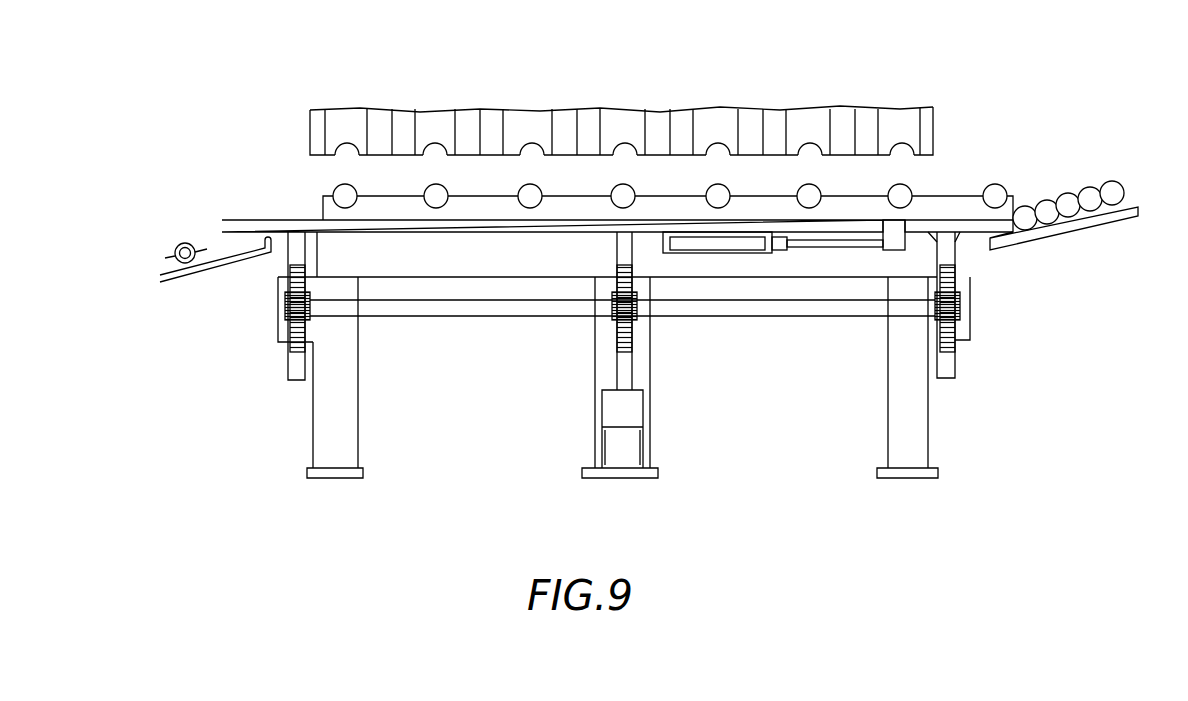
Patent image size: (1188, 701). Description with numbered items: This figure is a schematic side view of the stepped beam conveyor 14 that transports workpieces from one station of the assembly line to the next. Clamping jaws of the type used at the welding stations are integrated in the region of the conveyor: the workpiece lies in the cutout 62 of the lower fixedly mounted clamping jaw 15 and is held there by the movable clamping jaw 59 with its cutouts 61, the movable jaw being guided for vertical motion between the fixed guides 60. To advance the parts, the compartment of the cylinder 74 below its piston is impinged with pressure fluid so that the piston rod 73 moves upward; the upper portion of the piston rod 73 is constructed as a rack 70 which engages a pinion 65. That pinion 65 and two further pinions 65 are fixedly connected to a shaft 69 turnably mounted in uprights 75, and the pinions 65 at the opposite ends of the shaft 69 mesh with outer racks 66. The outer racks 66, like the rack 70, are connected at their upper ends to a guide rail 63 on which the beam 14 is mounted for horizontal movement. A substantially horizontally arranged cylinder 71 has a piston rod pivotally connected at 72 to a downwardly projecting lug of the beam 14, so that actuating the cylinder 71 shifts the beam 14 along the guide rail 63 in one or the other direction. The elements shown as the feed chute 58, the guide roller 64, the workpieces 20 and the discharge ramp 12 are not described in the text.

The discharge ramp 12 is at (1057, 228).
The stepped beam conveyor 14 is at (947, 207).
The lower fixedly mounted clamping jaw 15 is at (442, 255).
The workpieces 20 is at (998, 177).
The feed chute 58 is at (210, 265).
The movable clamping jaw 59 is at (345, 120).
The fixed guides 60 is at (380, 122).
The cutouts 61 is at (432, 140).
The cutout 62 is at (533, 200).
The guide rail 63 is at (250, 226).
The guide roller 64 is at (185, 243).
The pinion 65 is at (287, 314).
The outer racks 66 is at (298, 367).
The shaft 69 is at (485, 312).
The rack 70 is at (625, 368).
The horizontally arranged cylinder 71 is at (733, 245).
The pivotal connection 72 is at (893, 252).
The piston rod 73 is at (627, 407).
The cylinder 74 is at (623, 457).
The uprights 75 is at (338, 368).